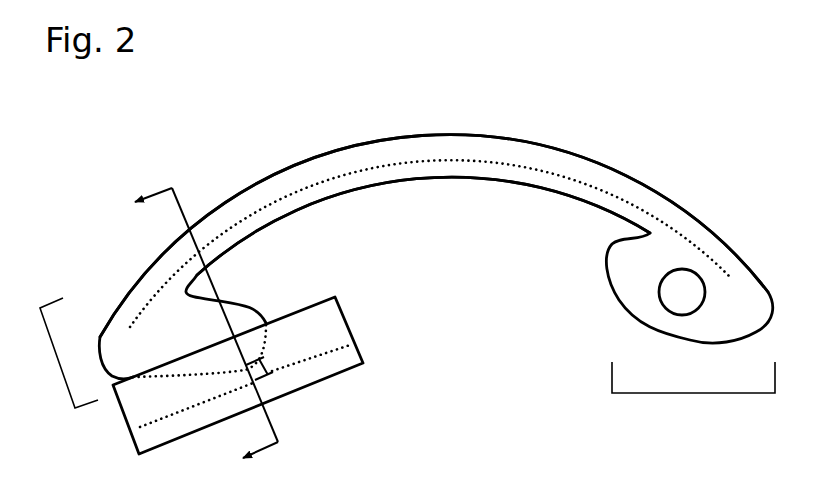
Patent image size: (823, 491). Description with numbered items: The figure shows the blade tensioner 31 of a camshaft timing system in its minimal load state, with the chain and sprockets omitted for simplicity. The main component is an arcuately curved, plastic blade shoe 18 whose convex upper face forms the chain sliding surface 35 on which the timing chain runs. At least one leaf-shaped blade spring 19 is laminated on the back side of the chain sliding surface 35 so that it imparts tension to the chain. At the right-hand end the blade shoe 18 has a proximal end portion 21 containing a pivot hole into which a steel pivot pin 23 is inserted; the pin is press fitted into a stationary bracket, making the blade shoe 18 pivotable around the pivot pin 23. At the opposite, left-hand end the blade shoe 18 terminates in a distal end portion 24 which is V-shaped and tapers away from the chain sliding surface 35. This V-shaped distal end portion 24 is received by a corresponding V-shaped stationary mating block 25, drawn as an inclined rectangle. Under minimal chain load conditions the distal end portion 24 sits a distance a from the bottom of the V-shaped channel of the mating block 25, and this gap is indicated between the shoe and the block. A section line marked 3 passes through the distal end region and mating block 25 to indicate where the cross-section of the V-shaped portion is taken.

The blade tensioner 31 is at (685, 102).
The chain sliding surface 35 is at (412, 138).
The blade spring 19 is at (485, 162).
The blade shoe 18 is at (450, 172).
The mating block 25 is at (328, 318).
The distance a is at (270, 361).
The pivot pin 23 is at (682, 293).
The proximal end portion 21 is at (693, 398).
The distal end portion 24 is at (58, 353).
The section line 3- 3 is at (194, 333).